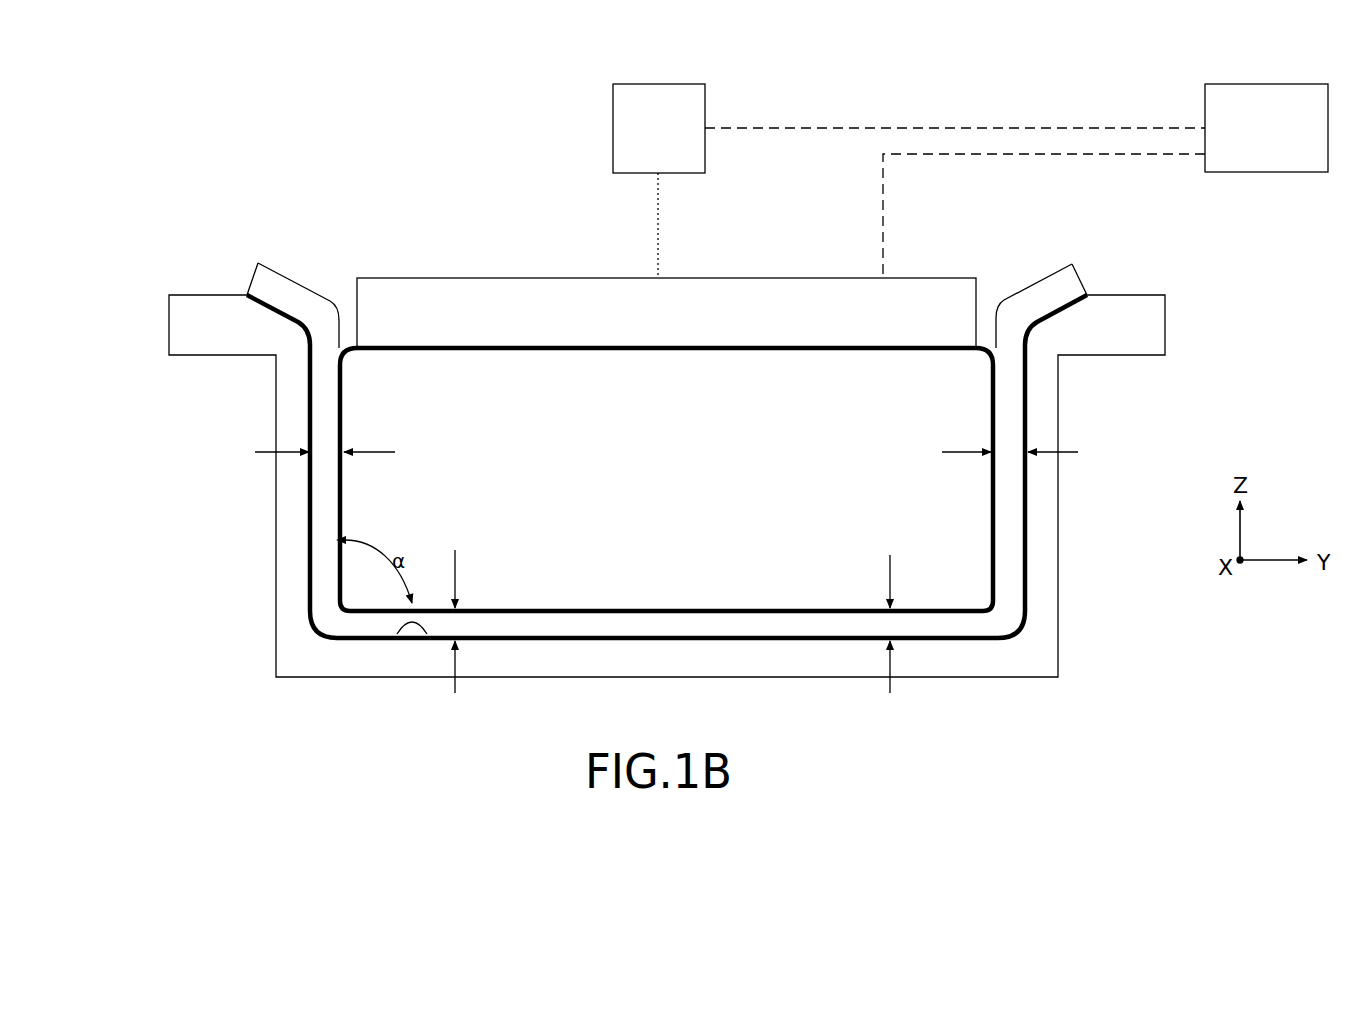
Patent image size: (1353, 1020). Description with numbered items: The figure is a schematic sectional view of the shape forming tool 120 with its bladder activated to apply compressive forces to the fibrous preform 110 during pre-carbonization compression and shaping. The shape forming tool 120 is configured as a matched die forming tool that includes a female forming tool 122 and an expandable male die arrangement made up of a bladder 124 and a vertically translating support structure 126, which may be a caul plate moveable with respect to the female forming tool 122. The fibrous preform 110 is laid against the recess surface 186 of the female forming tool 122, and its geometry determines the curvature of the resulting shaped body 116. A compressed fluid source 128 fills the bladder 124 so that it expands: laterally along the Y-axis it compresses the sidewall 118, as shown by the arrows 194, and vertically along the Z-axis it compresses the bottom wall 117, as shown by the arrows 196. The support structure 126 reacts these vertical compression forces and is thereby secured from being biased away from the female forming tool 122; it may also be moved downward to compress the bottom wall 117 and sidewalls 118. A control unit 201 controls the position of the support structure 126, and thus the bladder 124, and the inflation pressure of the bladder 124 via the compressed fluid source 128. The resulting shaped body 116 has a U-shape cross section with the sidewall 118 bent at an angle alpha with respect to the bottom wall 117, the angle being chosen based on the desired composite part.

The fibrous preform 110 is at (287, 275).
The shaped body 116 is at (255, 256).
The bottom wall 117 is at (580, 627).
The sidewall 118 is at (325, 526).
The shape forming tool 120 is at (172, 168).
The female forming tool 122 is at (277, 477).
The bladder 124 is at (680, 486).
The support structure 126 is at (628, 323).
The compressed fluid source 128 is at (622, 120).
The recess surface 186 is at (405, 634).
The arrows representing lateral compression forces 194 is at (388, 452).
The arrows representing vertical compression forces 196 is at (455, 570).
The control unit 201 is at (1230, 172).